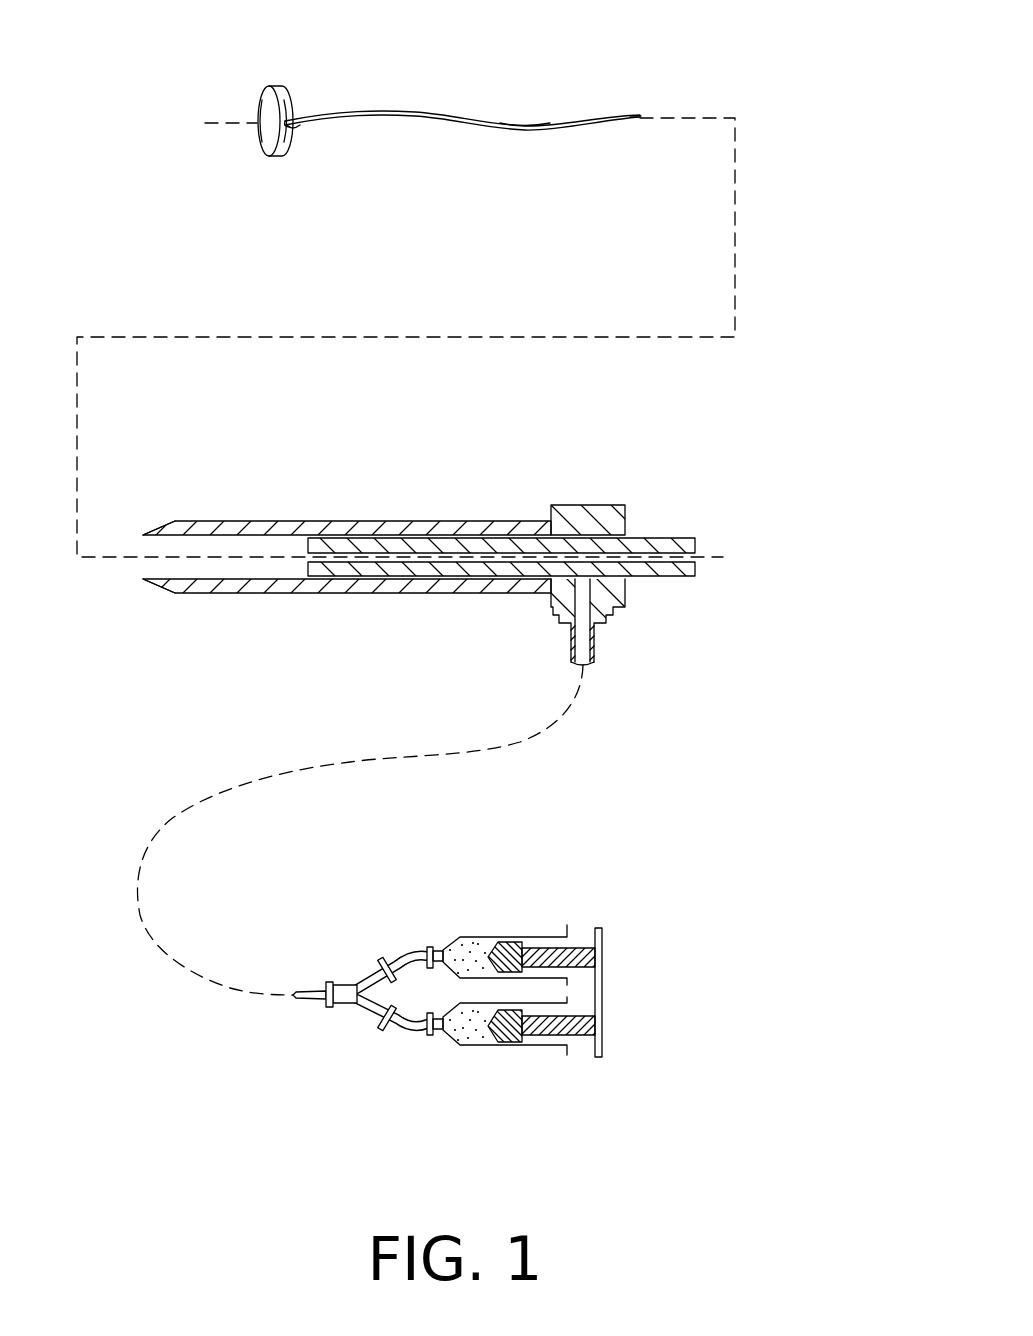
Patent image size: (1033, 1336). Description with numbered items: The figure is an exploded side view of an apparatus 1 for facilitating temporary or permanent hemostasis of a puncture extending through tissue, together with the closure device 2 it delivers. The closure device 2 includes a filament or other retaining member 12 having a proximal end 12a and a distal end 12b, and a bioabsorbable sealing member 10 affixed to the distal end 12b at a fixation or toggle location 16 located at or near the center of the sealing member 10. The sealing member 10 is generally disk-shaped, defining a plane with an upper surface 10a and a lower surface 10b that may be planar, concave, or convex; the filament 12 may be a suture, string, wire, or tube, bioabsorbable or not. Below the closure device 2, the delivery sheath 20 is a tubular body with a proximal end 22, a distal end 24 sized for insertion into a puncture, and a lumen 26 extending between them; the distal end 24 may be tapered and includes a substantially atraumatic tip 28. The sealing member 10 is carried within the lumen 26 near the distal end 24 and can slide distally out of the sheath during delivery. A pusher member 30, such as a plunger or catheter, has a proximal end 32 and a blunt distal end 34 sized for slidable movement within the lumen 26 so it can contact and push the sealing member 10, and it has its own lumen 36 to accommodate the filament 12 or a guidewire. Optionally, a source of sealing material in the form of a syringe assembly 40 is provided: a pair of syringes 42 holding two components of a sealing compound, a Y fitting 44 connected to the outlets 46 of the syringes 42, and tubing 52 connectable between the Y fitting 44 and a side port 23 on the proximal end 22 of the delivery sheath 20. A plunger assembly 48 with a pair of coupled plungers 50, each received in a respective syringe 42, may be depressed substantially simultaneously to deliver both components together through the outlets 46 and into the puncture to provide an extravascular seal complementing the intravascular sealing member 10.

The apparatus 1 is at (484, 66).
The closure device 2 is at (393, 104).
The sealing member 10 is at (277, 88).
The upper surface 10a is at (282, 148).
The lower surface 10b is at (260, 104).
The retaining member 12 is at (537, 126).
The proximal end 12a is at (640, 117).
The distal end 12b is at (293, 121).
The toggle location 16 is at (292, 126).
The delivery sheath 20 is at (370, 484).
The proximal end 22 is at (585, 505).
The side port 23 is at (556, 613).
The distal end 24 is at (236, 595).
The lumen 26 is at (195, 527).
The atraumatic tip 28 is at (165, 582).
The pusher member 30 is at (667, 530).
The proximal end 32 is at (661, 578).
The distal end 34 is at (331, 578).
The lumen 36 is at (416, 562).
The syringe assembly 40 is at (644, 947).
The syringes 42 is at (492, 936).
The Y fitting 44 is at (356, 1006).
The outlets 46 is at (432, 946).
The plunger assembly 48 is at (606, 996).
The plungers 50 is at (556, 1040).
The tubing 52 is at (596, 641).